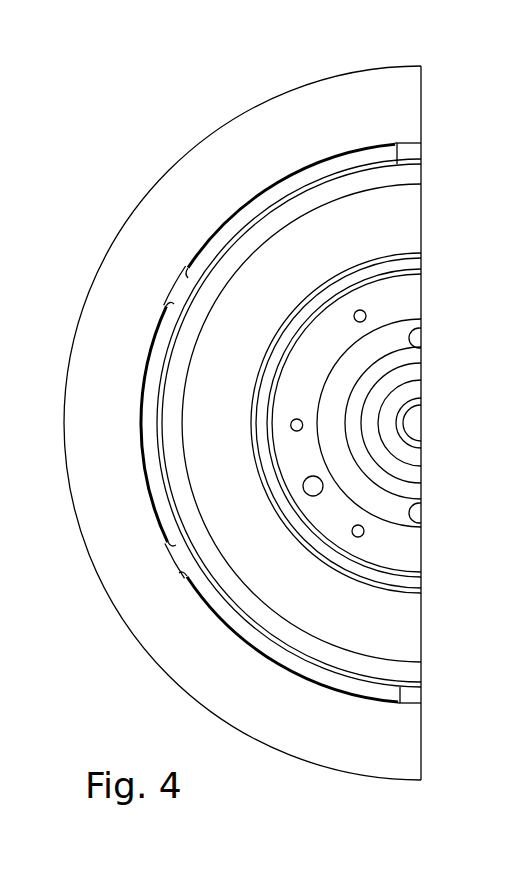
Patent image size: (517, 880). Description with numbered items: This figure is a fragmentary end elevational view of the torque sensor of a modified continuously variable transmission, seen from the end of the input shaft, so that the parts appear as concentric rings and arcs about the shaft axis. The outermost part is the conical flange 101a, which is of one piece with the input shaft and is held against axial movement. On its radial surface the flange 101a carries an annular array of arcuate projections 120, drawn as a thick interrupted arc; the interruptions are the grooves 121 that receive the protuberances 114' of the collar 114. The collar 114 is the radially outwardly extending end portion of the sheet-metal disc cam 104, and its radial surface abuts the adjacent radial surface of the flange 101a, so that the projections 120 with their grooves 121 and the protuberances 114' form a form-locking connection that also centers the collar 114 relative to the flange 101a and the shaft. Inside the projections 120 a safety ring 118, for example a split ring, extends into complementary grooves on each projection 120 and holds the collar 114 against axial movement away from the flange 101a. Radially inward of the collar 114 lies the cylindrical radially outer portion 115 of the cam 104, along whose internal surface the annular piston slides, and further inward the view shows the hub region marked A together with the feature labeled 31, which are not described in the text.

The conical flange 101a is at (272, 117).
The arcuate projections 120 is at (242, 222).
The grooves 121 is at (192, 269).
The collar 114 is at (446, 156).
The protuberances 114' is at (337, 487).
The cylindrical radially outer portion 115 is at (420, 178).
The safety ring 118 is at (357, 172).
The disc cam 104 is at (280, 190).
The central region A is at (405, 307).
The element 31 is at (0, 162).